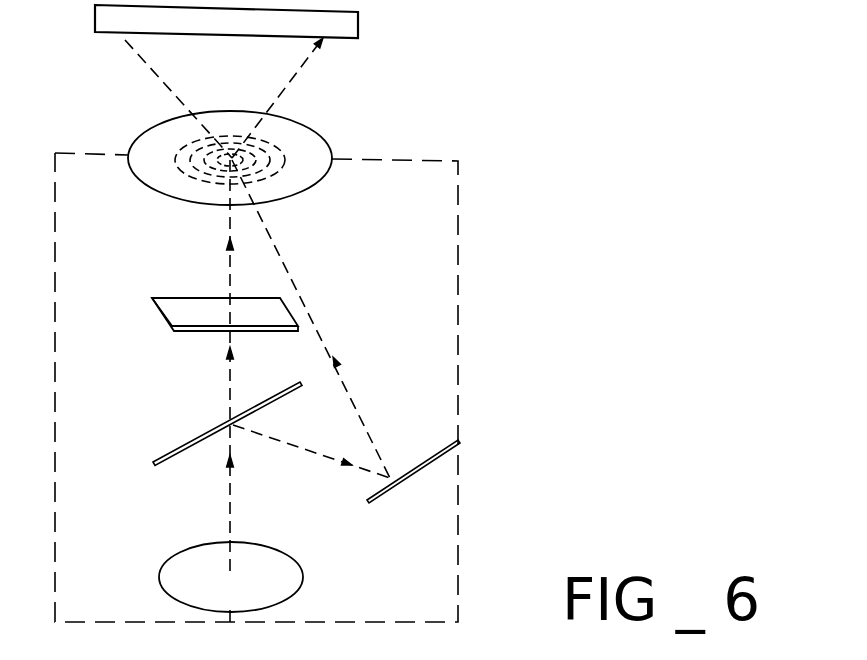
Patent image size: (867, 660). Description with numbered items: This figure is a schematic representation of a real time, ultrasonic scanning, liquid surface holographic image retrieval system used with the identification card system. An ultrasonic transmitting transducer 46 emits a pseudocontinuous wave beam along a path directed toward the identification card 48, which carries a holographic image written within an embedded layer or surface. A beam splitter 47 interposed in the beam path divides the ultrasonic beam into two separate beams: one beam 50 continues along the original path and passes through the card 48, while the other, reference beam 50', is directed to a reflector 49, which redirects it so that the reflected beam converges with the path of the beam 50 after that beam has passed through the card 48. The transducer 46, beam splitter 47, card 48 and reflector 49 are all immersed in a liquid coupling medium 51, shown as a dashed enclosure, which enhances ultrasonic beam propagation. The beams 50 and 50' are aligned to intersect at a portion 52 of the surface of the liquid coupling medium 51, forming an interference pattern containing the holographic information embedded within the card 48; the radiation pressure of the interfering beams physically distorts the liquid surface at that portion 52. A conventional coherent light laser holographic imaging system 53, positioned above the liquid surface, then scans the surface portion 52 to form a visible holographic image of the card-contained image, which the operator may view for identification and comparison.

The ultrasonic transmitting transducer 46 is at (270, 572).
The beam splitter 47 is at (168, 448).
The identification card 48 is at (175, 310).
The reflector 49 is at (420, 463).
The beam 50 is at (257, 330).
The reference beam 50' is at (311, 319).
The liquid coupling medium 51 is at (462, 360).
The surface portion of the liquid coupling medium 52 is at (175, 145).
The coherent light laser holographic imaging system 53 is at (343, 21).